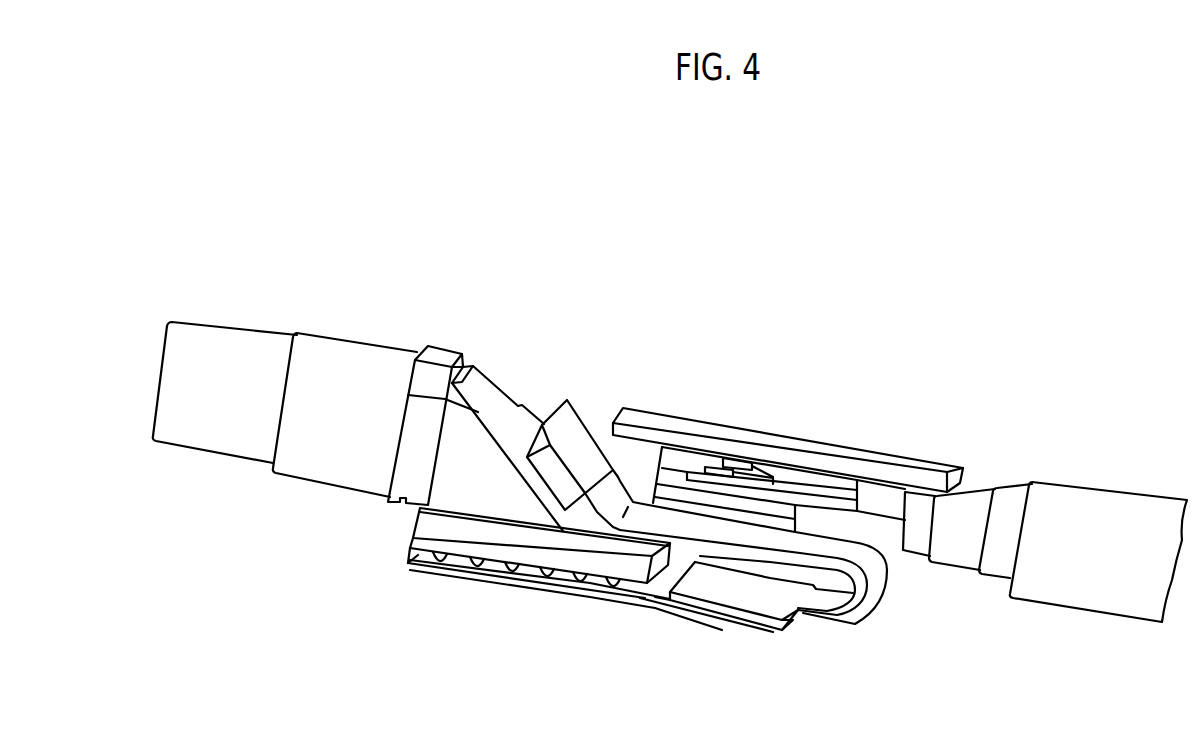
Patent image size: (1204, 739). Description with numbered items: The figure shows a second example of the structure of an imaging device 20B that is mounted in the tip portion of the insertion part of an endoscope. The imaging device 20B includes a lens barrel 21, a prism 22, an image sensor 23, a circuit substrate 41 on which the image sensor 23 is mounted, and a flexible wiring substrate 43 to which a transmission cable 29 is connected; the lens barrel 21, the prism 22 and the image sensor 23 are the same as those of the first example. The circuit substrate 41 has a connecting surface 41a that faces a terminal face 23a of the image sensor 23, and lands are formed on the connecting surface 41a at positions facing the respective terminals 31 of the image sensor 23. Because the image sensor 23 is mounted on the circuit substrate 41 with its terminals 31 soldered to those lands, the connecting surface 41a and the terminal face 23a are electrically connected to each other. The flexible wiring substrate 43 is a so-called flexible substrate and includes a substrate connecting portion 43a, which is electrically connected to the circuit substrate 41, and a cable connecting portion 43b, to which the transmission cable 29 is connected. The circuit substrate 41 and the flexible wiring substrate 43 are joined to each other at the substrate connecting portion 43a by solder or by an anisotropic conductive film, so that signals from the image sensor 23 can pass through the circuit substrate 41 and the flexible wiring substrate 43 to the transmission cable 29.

The imaging device 20B is at (531, 231).
The lens barrel 21 is at (334, 345).
The prism 22 is at (485, 388).
The image sensor 23 is at (425, 523).
The terminal face 23a is at (421, 553).
The transmission cable 29 is at (1066, 497).
The terminals 31 is at (440, 566).
The circuit substrate 41 is at (616, 604).
The connecting surface 41a is at (665, 590).
The flexible wiring substrate 43 is at (853, 628).
The substrate connecting portion 43a is at (738, 612).
The cable connecting portion 43b is at (668, 456).